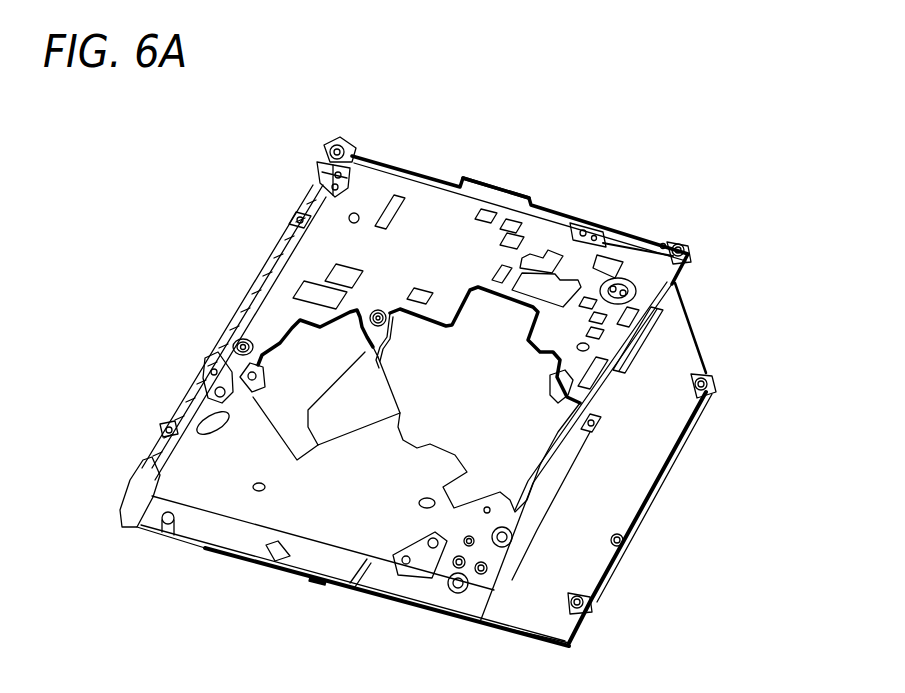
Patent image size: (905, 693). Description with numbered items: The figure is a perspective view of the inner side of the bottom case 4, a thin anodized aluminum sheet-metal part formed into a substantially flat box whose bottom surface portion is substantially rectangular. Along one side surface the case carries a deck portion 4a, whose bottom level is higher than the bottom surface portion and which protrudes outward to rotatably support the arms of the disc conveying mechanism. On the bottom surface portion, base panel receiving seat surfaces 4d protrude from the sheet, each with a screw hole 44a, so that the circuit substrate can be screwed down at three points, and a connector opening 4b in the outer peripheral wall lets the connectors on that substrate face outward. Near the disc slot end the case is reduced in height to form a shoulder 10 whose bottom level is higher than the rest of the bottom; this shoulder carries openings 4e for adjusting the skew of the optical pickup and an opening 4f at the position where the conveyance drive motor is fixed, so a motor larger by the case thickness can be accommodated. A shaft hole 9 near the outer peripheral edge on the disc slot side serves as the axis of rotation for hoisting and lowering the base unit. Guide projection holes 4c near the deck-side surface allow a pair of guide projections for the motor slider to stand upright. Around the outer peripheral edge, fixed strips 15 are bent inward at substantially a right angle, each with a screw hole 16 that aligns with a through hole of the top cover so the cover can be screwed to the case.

The bottom case 4 is at (487, 105).
The deck portion 4a is at (667, 343).
The connector opening 4b is at (460, 186).
The guide projection holes 4c is at (460, 592).
The base panel receiving seat surfaces 4d is at (327, 160).
The openings 4e is at (168, 528).
The opening 4f is at (357, 572).
The shaft hole 9 is at (147, 464).
The shoulder 10 is at (230, 536).
The fixed strips 15 is at (336, 149).
The screw hole 16 is at (346, 147).
The screw hole 44a is at (317, 180).